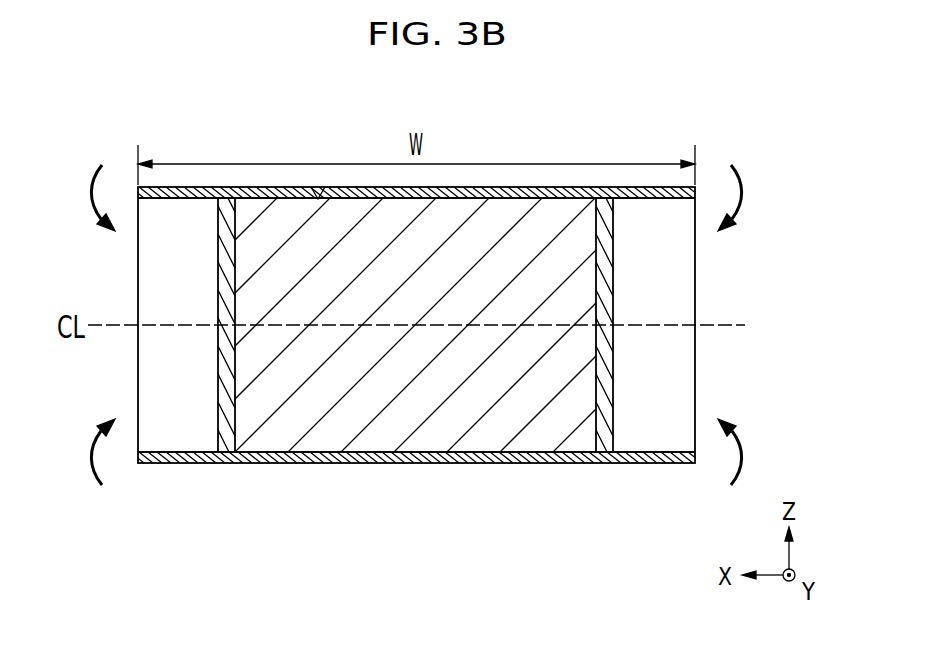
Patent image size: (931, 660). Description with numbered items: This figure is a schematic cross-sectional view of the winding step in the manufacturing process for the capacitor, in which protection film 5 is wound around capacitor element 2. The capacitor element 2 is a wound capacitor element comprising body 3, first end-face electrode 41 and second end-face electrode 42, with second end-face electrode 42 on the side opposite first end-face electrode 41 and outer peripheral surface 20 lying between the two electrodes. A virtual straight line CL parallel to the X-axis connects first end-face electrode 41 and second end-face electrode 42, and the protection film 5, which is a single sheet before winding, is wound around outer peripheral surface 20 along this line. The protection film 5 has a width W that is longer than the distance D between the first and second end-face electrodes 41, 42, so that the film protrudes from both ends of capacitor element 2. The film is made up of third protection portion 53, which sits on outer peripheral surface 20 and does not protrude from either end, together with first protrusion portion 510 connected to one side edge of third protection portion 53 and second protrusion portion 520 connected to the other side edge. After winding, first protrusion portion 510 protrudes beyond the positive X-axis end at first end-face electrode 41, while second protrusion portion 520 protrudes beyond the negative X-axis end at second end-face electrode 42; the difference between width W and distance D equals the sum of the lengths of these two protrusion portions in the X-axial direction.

The capacitor element 2 is at (250, 363).
The body 3 is at (587, 390).
The protection film 5 is at (401, 196).
The outer peripheral surface 20 is at (318, 200).
The first end-face electrode 41 is at (226, 283).
The second end-face electrode 42 is at (601, 310).
The third protection portion 53 is at (445, 195).
The first protrusion portion 510 is at (192, 194).
The second protrusion portion 520 is at (643, 196).